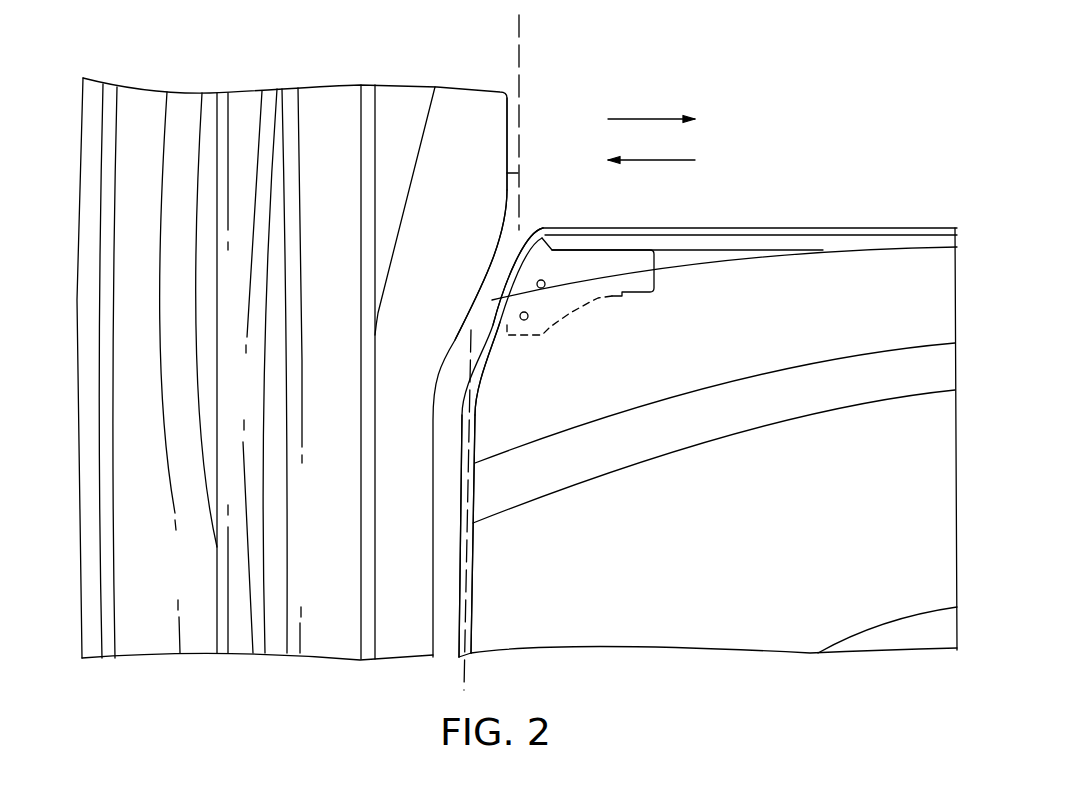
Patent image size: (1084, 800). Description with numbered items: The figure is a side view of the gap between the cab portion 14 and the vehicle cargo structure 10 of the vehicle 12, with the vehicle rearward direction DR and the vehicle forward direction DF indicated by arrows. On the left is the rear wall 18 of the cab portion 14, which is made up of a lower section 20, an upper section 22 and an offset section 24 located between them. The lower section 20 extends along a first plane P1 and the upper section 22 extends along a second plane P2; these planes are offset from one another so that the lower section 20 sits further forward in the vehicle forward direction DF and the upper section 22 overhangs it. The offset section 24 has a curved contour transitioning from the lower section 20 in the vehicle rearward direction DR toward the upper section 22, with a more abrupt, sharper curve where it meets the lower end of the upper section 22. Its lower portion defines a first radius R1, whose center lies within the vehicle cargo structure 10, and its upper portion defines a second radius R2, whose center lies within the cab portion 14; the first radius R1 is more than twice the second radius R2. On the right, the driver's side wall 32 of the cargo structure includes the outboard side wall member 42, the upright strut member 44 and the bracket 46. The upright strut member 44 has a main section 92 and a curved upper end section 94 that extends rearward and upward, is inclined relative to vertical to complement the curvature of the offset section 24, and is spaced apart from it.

The vehicle cargo structure 10 is at (770, 225).
The vehicle 12 is at (627, 62).
The cab portion 14 is at (398, 82).
The rear wall 18 is at (507, 133).
The lower section 20 is at (458, 567).
The upper section 22 is at (507, 173).
The offset section 24 is at (545, 282).
The driver's side wall 32 is at (852, 242).
The outboard side wall member 42 is at (898, 292).
The upright strut member 44 is at (470, 452).
The bracket 46 is at (613, 300).
The main section 92 is at (463, 503).
The curved upper end section 94 is at (520, 266).
The first plane P1 is at (464, 677).
The second plane P2 is at (519, 27).
The first radius R1 is at (478, 295).
The second radius R2 is at (493, 247).
The vehicle rearward direction DR is at (645, 118).
The vehicle forward direction DF is at (657, 162).